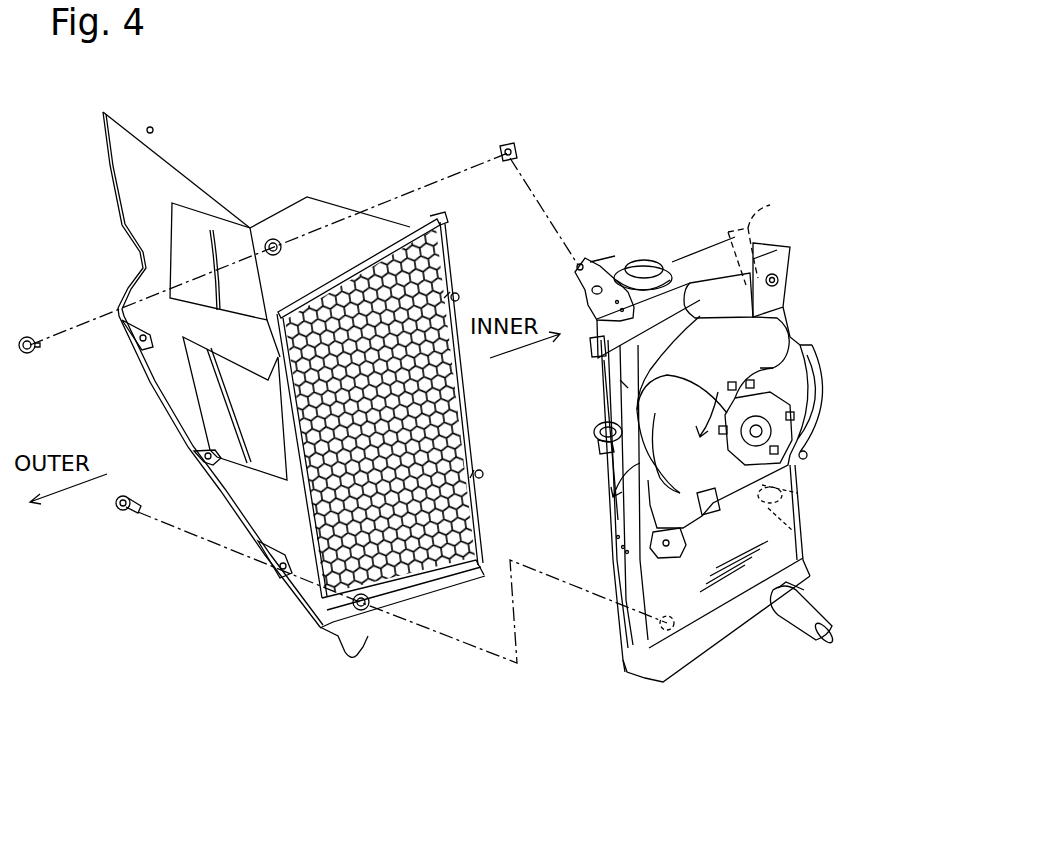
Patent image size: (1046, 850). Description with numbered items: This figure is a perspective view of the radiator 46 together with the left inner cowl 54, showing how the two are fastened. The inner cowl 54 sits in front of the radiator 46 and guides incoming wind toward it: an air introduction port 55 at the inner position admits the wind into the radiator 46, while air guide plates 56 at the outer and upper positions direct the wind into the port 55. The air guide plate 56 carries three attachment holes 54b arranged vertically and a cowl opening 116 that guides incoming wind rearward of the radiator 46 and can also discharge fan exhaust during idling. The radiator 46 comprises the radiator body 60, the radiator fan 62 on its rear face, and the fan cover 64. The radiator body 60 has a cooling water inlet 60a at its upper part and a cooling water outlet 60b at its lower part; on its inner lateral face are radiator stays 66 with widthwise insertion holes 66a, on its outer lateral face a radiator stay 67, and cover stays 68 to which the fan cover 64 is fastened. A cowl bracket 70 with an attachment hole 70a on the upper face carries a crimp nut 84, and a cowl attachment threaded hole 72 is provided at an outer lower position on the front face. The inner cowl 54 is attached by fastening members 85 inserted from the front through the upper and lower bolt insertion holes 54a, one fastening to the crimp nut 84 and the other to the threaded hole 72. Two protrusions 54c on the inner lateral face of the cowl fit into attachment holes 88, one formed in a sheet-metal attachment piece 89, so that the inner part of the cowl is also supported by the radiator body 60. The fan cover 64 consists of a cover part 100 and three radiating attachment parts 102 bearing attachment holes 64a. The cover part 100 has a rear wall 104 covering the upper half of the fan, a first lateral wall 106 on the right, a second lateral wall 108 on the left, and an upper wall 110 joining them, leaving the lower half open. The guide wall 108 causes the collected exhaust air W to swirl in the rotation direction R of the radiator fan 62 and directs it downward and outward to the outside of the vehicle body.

The radiator 46 is at (762, 222).
The inner cowl 54 is at (191, 161).
The bolt insertion hole 54a is at (272, 240).
The attachment hole 54b is at (143, 343).
The protrusion 54c is at (460, 293).
The air introduction port 55 is at (362, 272).
The air guide plate 56 is at (313, 217).
The radiator body 60 is at (713, 607).
The cooling water inlet 60a is at (756, 311).
The cooling water outlet 60b is at (807, 642).
The radiator fan 62 is at (758, 430).
The fan cover 64 is at (772, 337).
The attachment hole 64a is at (640, 575).
The radiator stay 66 is at (760, 224).
The insertion hole 66a is at (733, 262).
The radiator stay 67 is at (597, 442).
The cover stay 68 is at (633, 553).
The cowl bracket 70 is at (585, 288).
The attachment hole 70a is at (578, 266).
The cowl attachment threaded hole 72 is at (657, 655).
The crimp nut 84 is at (520, 150).
The fastening member 85 is at (30, 340).
The attachment hole 88 is at (797, 490).
The attachment piece 89 is at (783, 512).
The cover part 100 is at (627, 378).
The attachment part 102 is at (780, 287).
The rear wall 104 is at (658, 262).
The first lateral wall 106 is at (831, 350).
The second lateral wall 108 is at (593, 422).
The upper wall 110 is at (683, 358).
The cowl opening 116 is at (222, 247).
The rotation direction R is at (619, 376).
The exhaust air W is at (610, 487).